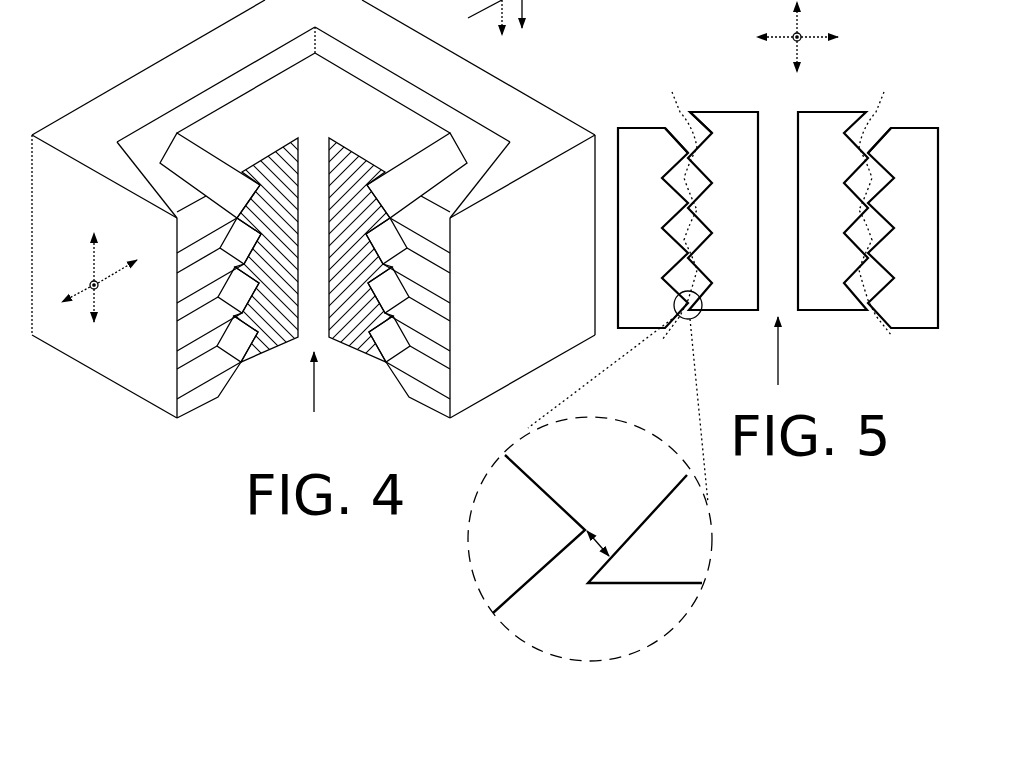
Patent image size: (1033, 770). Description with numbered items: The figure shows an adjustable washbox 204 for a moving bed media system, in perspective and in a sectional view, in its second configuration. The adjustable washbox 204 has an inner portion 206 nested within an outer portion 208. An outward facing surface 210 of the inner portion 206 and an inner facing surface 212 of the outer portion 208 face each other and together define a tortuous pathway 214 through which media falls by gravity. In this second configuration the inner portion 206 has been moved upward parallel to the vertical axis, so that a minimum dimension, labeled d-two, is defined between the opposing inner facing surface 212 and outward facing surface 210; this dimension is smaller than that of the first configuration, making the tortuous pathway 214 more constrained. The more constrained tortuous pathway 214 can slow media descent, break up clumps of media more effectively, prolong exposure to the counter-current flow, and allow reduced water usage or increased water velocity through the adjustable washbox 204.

In FIG. 4, the adjustable washbox 204 is at (150, 28).
In FIG. 5, the adjustable washbox 204 is at (729, 76).
In FIG. 5, the inner portion 206 is at (747, 173).
In FIG. 5, the outer portion 208 is at (668, 158).
In FIG. 5, the outward facing surface 210 is at (692, 103).
In FIG. 5, the inner facing surface 212 is at (668, 127).
In FIG. 5, the tortuous pathway 214 is at (774, 204).